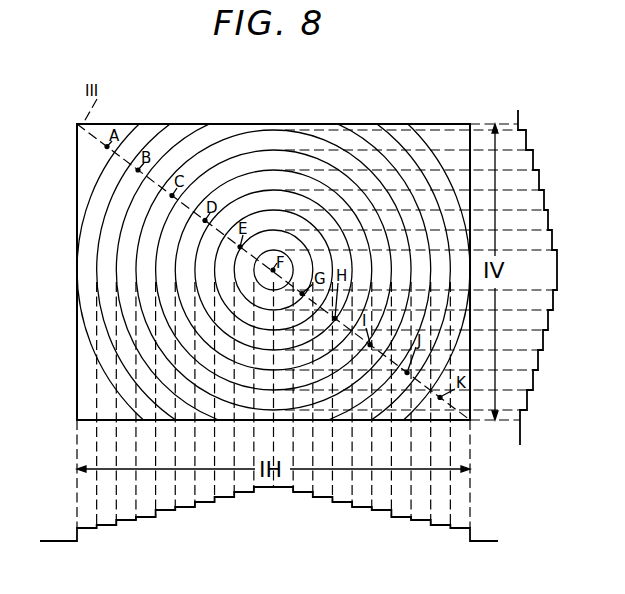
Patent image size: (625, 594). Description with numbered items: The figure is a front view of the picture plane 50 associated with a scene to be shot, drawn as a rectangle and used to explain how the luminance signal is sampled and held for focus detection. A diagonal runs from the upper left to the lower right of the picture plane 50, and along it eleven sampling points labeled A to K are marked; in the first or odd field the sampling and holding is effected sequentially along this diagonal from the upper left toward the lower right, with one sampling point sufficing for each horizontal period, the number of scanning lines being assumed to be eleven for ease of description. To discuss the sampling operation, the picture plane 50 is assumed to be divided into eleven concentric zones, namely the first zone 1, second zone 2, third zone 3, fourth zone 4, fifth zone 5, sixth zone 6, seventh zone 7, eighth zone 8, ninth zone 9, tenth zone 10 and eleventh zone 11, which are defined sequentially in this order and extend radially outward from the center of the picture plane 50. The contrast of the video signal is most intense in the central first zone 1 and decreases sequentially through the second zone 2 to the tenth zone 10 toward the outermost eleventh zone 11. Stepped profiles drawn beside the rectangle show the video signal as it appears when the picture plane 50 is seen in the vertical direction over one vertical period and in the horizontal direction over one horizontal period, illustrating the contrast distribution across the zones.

The picture plane 50 is at (77, 369).
The concentric zone R1 1 is at (273, 270).
The concentric zone R2 2 is at (273, 270).
The concentric zone R3 3 is at (274, 270).
The concentric zone R4 4 is at (273, 270).
The concentric zone R5 5 is at (273, 270).
The concentric zone R6 6 is at (274, 270).
The concentric zone R7 7 is at (273, 270).
The concentric zone R8 8 is at (273, 270).
The concentric zone R9 9 is at (274, 270).
The concentric zone R10 10 is at (273, 270).
The concentric zone R11 11 is at (273, 272).